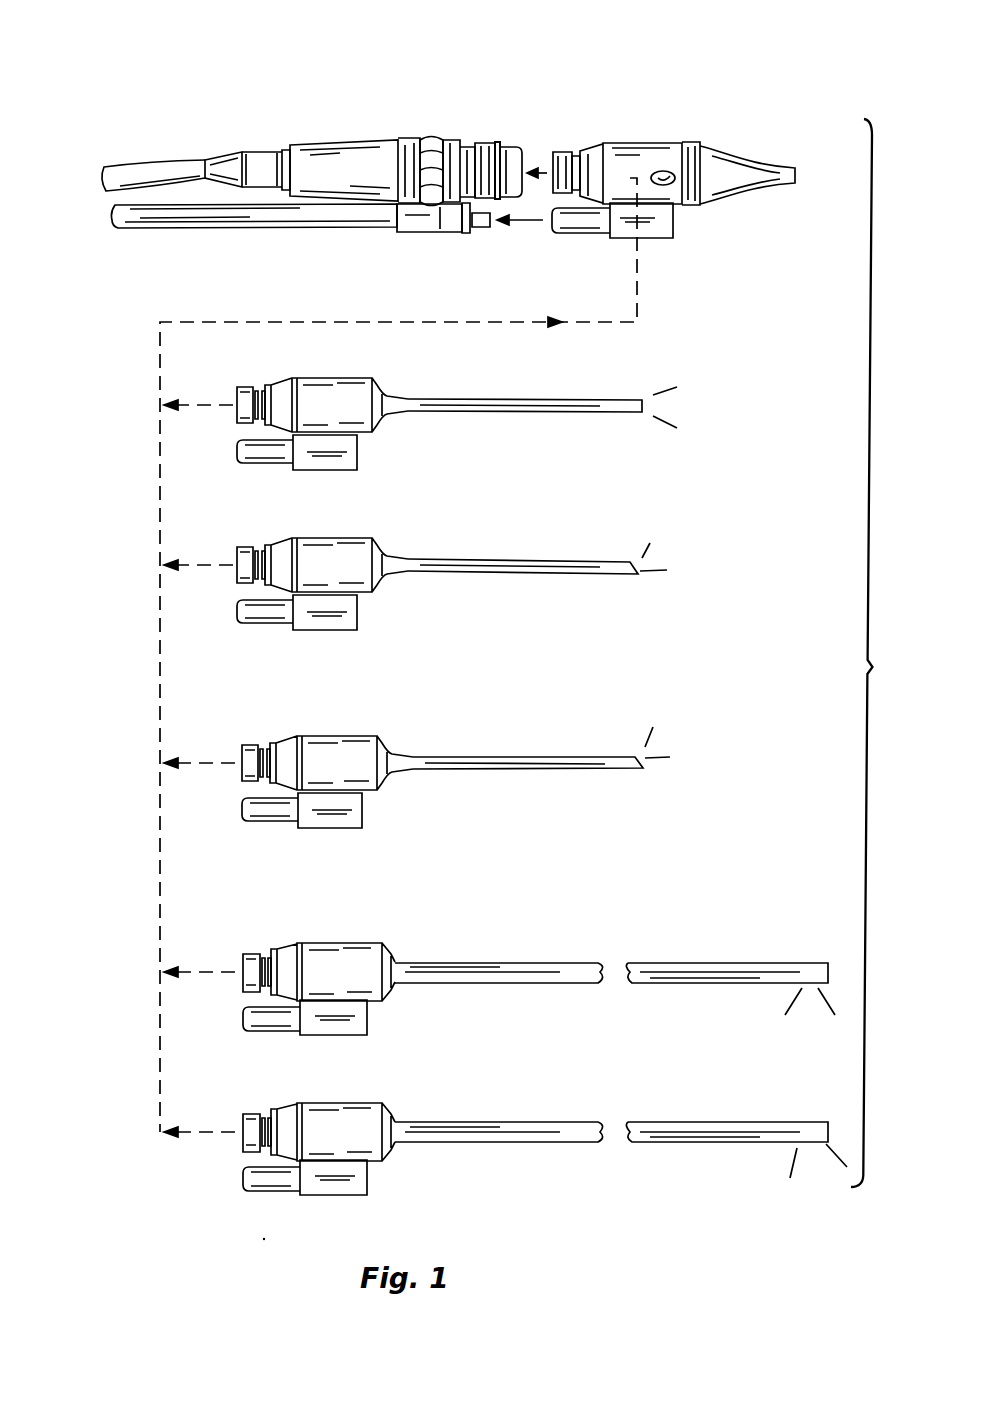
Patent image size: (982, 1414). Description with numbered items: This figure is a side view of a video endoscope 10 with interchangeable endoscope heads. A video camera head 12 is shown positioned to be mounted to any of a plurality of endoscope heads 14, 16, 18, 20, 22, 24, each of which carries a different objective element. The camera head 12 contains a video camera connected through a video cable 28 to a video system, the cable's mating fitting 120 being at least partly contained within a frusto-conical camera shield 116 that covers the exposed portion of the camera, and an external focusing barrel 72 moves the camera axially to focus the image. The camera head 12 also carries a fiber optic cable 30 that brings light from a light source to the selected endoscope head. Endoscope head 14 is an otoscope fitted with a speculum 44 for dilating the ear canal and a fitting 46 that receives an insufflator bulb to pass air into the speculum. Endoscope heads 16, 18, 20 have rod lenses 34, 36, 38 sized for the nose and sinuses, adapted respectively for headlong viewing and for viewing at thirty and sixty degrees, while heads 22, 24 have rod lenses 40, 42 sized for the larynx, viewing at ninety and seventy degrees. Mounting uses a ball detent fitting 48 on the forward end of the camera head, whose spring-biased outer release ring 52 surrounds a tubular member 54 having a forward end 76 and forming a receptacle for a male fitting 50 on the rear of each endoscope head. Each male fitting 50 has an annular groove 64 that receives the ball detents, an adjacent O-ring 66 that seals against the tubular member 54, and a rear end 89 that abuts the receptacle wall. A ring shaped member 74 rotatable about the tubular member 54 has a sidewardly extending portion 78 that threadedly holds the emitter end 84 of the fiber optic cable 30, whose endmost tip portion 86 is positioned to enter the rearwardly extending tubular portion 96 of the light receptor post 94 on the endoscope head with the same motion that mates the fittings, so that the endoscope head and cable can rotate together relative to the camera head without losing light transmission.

The video endoscope 10 is at (876, 653).
The video camera head 12 is at (302, 138).
The endoscope head 14 is at (683, 113).
The endoscope head 16 is at (608, 403).
The endoscope head 18 is at (609, 564).
The endoscope head 20 is at (610, 758).
The endoscope head 22 is at (739, 963).
The endoscope head 24 is at (746, 1122).
The video cable 28 is at (101, 185).
The fiber optic cable 30 is at (147, 226).
The rod lens 34 is at (493, 416).
The rod lens 36 is at (479, 577).
The rod lens 38 is at (488, 771).
The rod lens 40 is at (496, 985).
The rod lens 42 is at (478, 1145).
The speculum 44 is at (790, 186).
The fitting 46 is at (672, 180).
The ball detent fitting 48 is at (494, 143).
The male fitting 50 is at (564, 152).
The outer release ring 52 is at (513, 147).
The tubular member 54 is at (478, 145).
The annular groove 64 is at (580, 150).
The O-ring 66 is at (604, 143).
The focusing barrel 72 is at (430, 137).
The ring shaped member 74 is at (468, 144).
The forward end 76 is at (536, 150).
The sidewardly extending portion 78 is at (458, 235).
The emitter end 84 is at (470, 234).
The endmost tip portion 86 is at (486, 229).
The rear end 89 is at (530, 225).
The light receptor post 94 is at (665, 239).
The rearwardly extending tubular portion 96 is at (586, 234).
The camera shield 116 is at (323, 142).
The mating fitting 120 is at (290, 143).